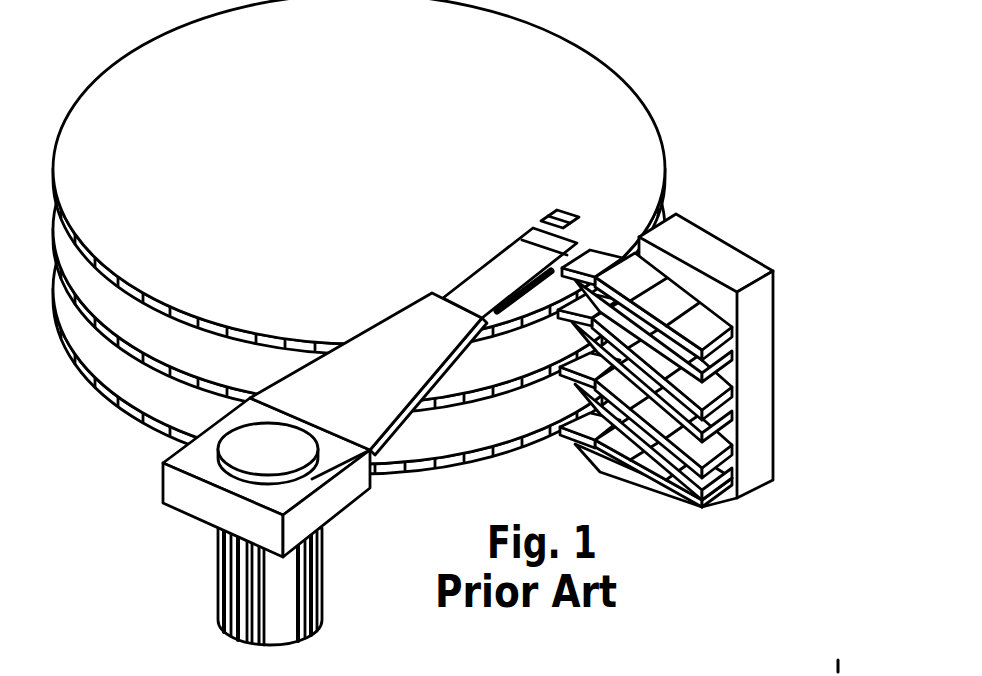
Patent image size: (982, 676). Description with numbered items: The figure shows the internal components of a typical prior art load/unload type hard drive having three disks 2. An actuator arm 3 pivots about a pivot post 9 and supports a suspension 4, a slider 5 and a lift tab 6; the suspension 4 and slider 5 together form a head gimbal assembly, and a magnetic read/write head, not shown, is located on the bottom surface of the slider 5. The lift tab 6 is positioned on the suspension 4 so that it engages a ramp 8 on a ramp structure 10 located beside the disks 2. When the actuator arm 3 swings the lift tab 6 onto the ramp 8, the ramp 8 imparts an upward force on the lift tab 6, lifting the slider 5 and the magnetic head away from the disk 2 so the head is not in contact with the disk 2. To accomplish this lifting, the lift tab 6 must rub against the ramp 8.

The disk 2 is at (228, 255).
The actuator arm 3 is at (369, 385).
The suspension 4 is at (488, 270).
The slider 5 is at (523, 298).
The lift tab 6 is at (538, 225).
The ramp 8 is at (600, 257).
The pivot post 9 is at (259, 601).
The ramp structure 10 is at (711, 341).